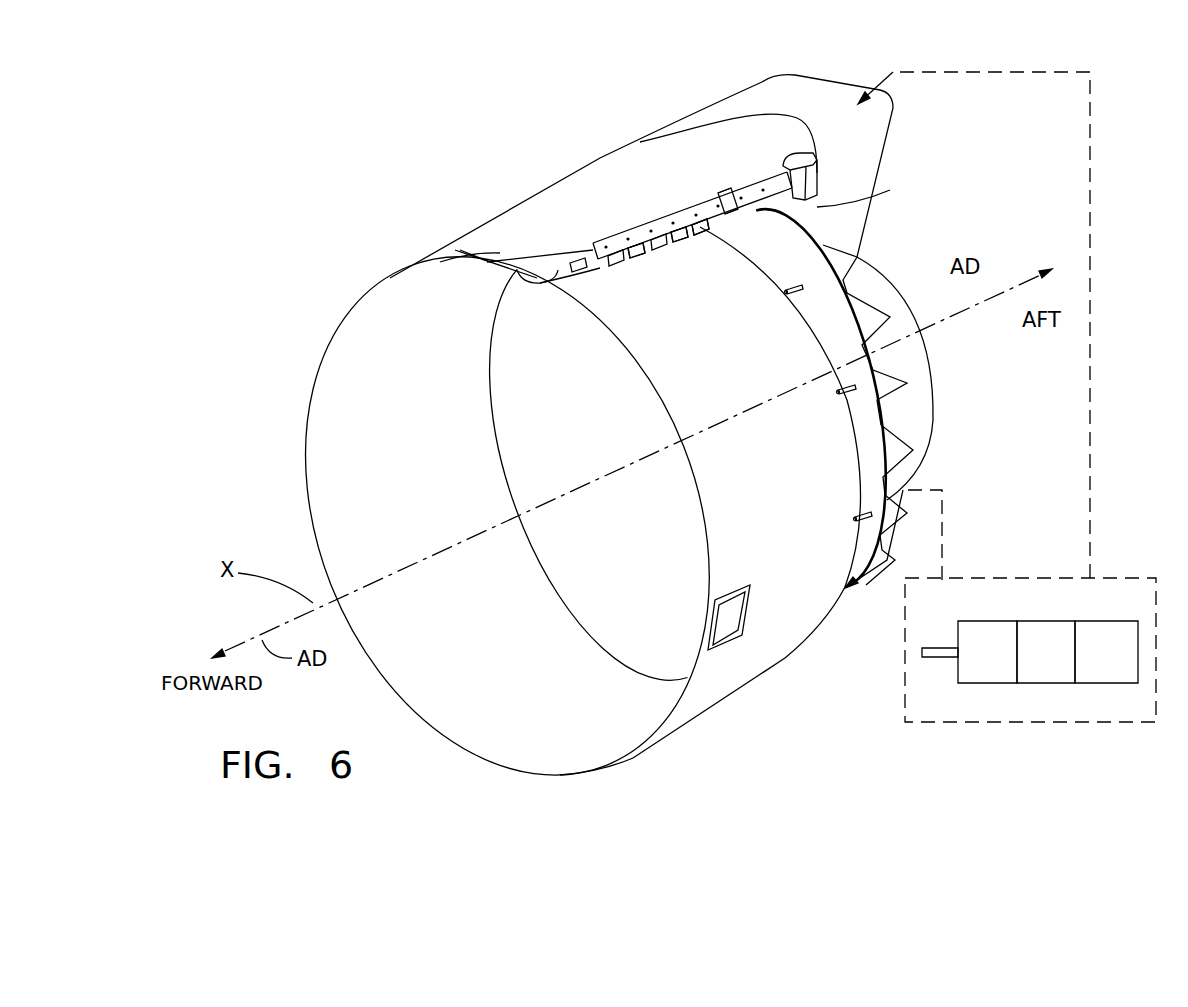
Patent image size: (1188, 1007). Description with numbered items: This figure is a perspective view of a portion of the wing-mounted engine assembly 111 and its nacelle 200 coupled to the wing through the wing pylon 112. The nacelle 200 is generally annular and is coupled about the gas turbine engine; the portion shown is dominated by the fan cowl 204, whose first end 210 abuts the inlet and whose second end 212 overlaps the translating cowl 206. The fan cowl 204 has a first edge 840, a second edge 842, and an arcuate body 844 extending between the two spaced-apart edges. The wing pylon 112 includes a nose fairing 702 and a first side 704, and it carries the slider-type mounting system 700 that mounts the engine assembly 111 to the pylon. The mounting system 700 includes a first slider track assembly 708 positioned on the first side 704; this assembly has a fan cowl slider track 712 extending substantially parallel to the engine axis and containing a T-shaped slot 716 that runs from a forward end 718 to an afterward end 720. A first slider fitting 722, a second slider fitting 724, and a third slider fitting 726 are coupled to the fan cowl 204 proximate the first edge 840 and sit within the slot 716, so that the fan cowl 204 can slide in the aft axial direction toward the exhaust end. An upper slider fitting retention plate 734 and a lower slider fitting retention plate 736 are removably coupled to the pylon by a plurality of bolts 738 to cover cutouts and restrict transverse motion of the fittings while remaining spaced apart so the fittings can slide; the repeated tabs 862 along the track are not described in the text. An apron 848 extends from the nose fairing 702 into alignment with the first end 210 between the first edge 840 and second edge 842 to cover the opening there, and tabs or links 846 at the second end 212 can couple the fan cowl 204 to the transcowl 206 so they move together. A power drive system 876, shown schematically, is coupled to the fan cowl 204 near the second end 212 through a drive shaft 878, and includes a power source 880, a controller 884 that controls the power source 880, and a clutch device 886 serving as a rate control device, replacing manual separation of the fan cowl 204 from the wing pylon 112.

The wing-mounted engine assembly 111 is at (720, 742).
The wing pylon 112 is at (757, 85).
The nacelle 200 is at (767, 688).
The fan cowl 204 is at (620, 768).
The translating cowl (transcowl) 206 is at (920, 393).
The first end of fan cowl 210 is at (305, 442).
The second end of fan cowl 212 is at (887, 478).
The slider-type mounting system 700 is at (537, 160).
The nose fairing 702 is at (518, 212).
The first side of wing pylon 704 is at (857, 176).
The first slider track assembly 708 is at (730, 187).
The fan cowl slider track 712 is at (820, 208).
The T-shaped slot 716 is at (820, 208).
The forward end of slot 718 is at (593, 262).
The afterward end of slot 720 is at (810, 151).
The first slider fitting 722 is at (603, 270).
The second slider fitting 724 is at (672, 256).
The third slider fitting 726 is at (752, 268).
The upper slider fitting retention plate 734 is at (585, 256).
The lower slider fitting retention plate 736 is at (750, 206).
The bolts 738 is at (670, 222).
The first edge of fan cowl 840 is at (515, 274).
The second edge of fan cowl 842 is at (490, 250).
The arcuate body 844 is at (517, 720).
The tabs or links 846 is at (808, 284).
The apron 848 is at (490, 257).
The tabs 862 is at (575, 259).
The power drive system 876 is at (310, 322).
The drive shaft 878 is at (940, 645).
The power source 880 is at (1065, 665).
The controller 884 is at (1124, 665).
The clutch device 886 is at (1004, 665).